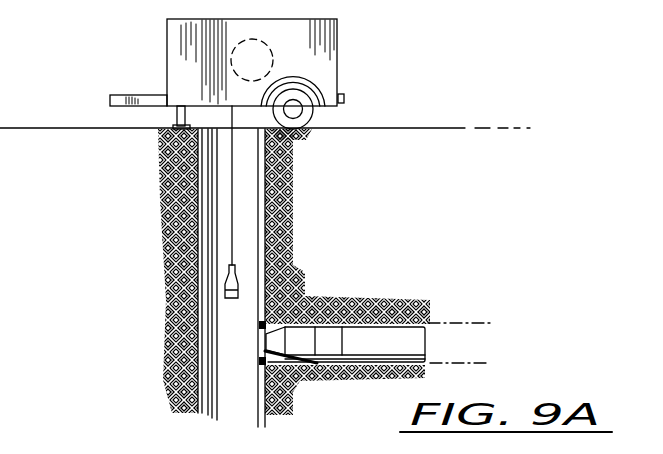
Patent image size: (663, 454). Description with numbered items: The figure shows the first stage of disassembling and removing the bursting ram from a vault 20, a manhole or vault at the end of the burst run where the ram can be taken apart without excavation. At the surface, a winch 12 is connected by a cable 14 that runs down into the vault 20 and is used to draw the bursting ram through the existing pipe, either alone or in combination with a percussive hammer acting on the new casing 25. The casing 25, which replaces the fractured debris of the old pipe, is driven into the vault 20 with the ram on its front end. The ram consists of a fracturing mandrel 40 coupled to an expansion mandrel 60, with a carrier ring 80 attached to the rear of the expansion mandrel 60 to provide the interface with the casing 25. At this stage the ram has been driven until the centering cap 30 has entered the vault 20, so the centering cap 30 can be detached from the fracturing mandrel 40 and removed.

The winch 12 is at (333, 56).
The cable 14 is at (232, 209).
The vault 20 is at (247, 197).
The casing 25 is at (374, 335).
The centering cap 30 is at (230, 290).
The fracturing mandrel 40 is at (272, 335).
The expansion mandrel 60 is at (300, 348).
The carrier ring 80 is at (331, 335).